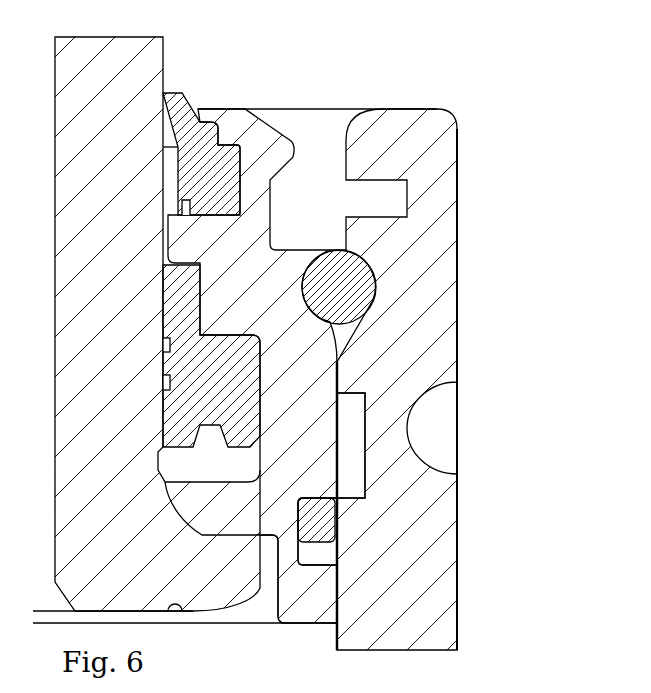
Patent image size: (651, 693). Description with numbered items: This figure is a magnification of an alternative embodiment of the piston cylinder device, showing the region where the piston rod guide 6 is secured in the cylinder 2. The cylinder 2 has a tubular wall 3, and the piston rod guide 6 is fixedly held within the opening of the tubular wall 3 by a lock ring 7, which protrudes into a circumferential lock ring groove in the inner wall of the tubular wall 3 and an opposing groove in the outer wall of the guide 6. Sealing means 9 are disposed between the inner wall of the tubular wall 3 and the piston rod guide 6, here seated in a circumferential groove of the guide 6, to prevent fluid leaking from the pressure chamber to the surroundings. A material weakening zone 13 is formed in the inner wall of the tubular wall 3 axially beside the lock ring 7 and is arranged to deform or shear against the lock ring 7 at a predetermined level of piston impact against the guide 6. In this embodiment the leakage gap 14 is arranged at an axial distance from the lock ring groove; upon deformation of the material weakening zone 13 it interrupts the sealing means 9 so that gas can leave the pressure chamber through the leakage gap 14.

The cylinder 2 is at (480, 620).
The tubular wall 3 is at (437, 555).
The piston rod guide 6 is at (244, 133).
The lock ring 7 is at (358, 293).
The sealing means 9 is at (327, 528).
The material weakening zone 13 is at (368, 232).
The leakage gap 14 is at (343, 445).